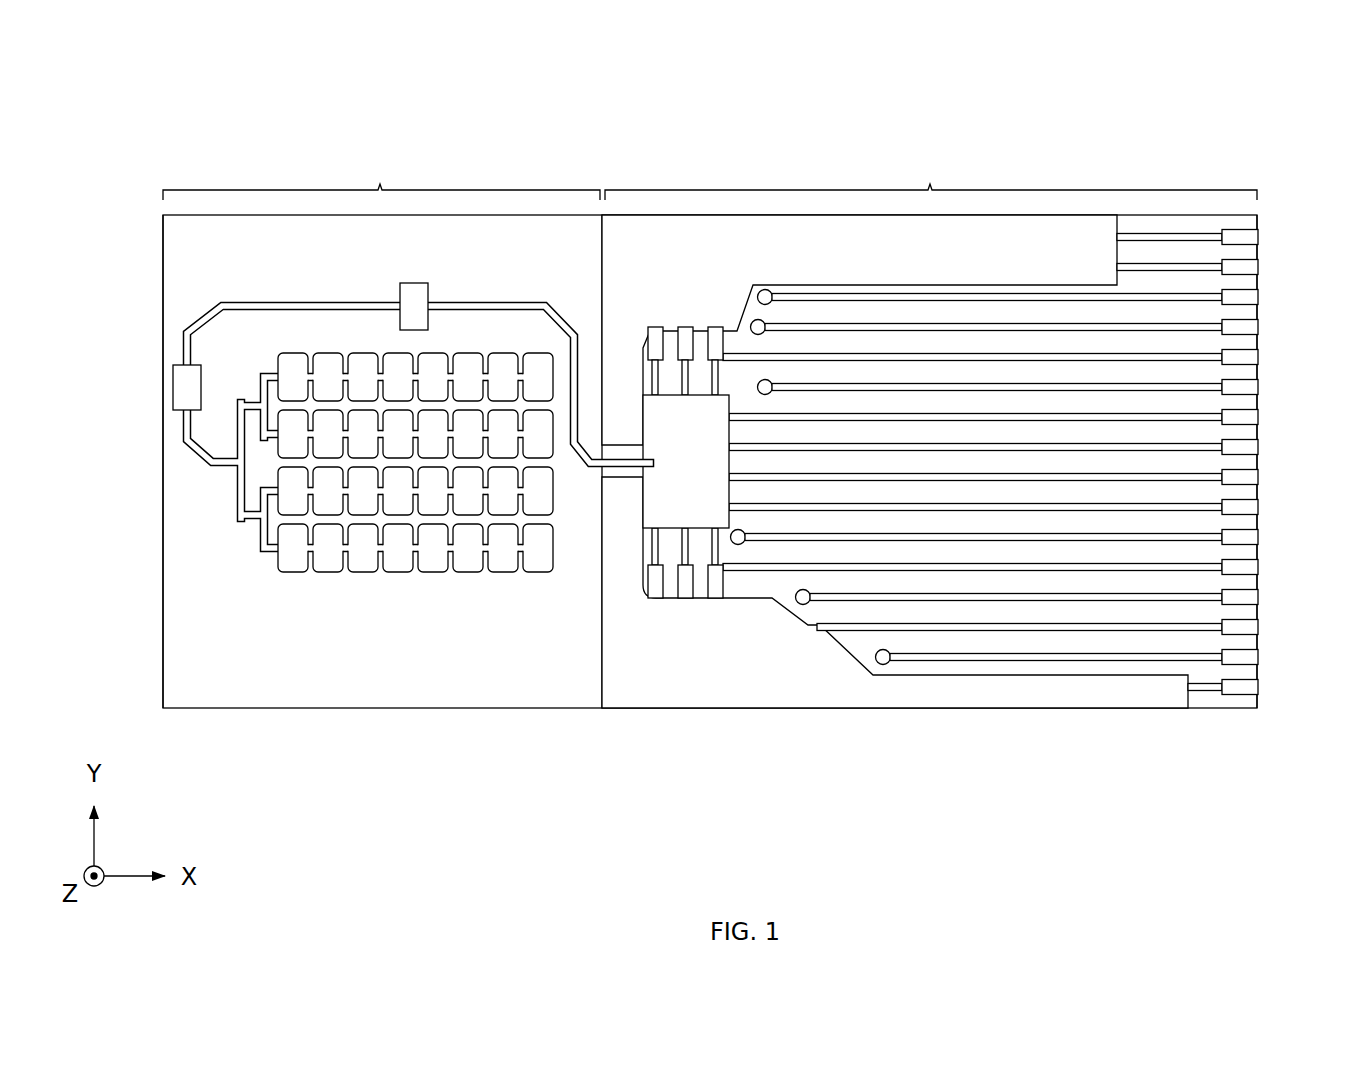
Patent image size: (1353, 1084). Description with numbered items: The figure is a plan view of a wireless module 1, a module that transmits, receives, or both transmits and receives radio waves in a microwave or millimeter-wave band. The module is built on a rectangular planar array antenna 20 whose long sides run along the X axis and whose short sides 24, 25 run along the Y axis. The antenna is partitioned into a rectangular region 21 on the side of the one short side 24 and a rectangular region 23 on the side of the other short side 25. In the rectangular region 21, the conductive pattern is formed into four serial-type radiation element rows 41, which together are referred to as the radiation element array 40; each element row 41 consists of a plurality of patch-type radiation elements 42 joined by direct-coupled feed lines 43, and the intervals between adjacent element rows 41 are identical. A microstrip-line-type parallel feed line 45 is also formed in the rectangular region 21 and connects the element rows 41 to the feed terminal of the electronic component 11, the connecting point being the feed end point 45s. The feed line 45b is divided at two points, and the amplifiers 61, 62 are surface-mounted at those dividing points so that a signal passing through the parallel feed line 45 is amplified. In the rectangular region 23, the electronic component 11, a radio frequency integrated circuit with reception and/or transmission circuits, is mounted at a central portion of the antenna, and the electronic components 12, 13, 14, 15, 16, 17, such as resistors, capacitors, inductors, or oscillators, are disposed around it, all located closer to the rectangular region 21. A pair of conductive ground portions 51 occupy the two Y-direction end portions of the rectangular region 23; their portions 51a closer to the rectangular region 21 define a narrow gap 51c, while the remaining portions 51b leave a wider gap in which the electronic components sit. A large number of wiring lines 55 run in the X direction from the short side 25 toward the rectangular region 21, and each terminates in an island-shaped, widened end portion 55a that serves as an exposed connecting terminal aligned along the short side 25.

The wireless module 1 is at (1242, 118).
The electronic component 11 is at (792, 558).
The electronic component 12 is at (655, 598).
The electronic component 13 is at (685, 598).
The electronic component 14 is at (715, 598).
The electronic component 15 is at (658, 347).
The electronic component 16 is at (688, 347).
The electronic component 17 is at (718, 347).
The planar array antenna 20 is at (178, 710).
The rectangular region 21 is at (381, 177).
The rectangular region 23 is at (931, 177).
The short side 24 is at (162, 276).
The short side 25 is at (1258, 696).
The radiation element array 40 is at (333, 551).
The serial-type radiation element row 41 is at (333, 551).
The patch-type radiation element 42 is at (360, 560).
The direct-coupled feed line 43 is at (345, 556).
The parallel feed line 45 is at (356, 504).
The feed line 45b is at (318, 300).
The feed end point 45s is at (647, 450).
The conductive ground portion 51 is at (961, 514).
The portion of conductive ground portion 51a is at (622, 488).
The remaining portion of conductive ground portion 51b is at (928, 268).
The gap 51c is at (635, 473).
The wiring line 55 is at (1165, 240).
The end portion 55a is at (1258, 237).
The amplifier 61 is at (412, 283).
The amplifier 62 is at (172, 390).